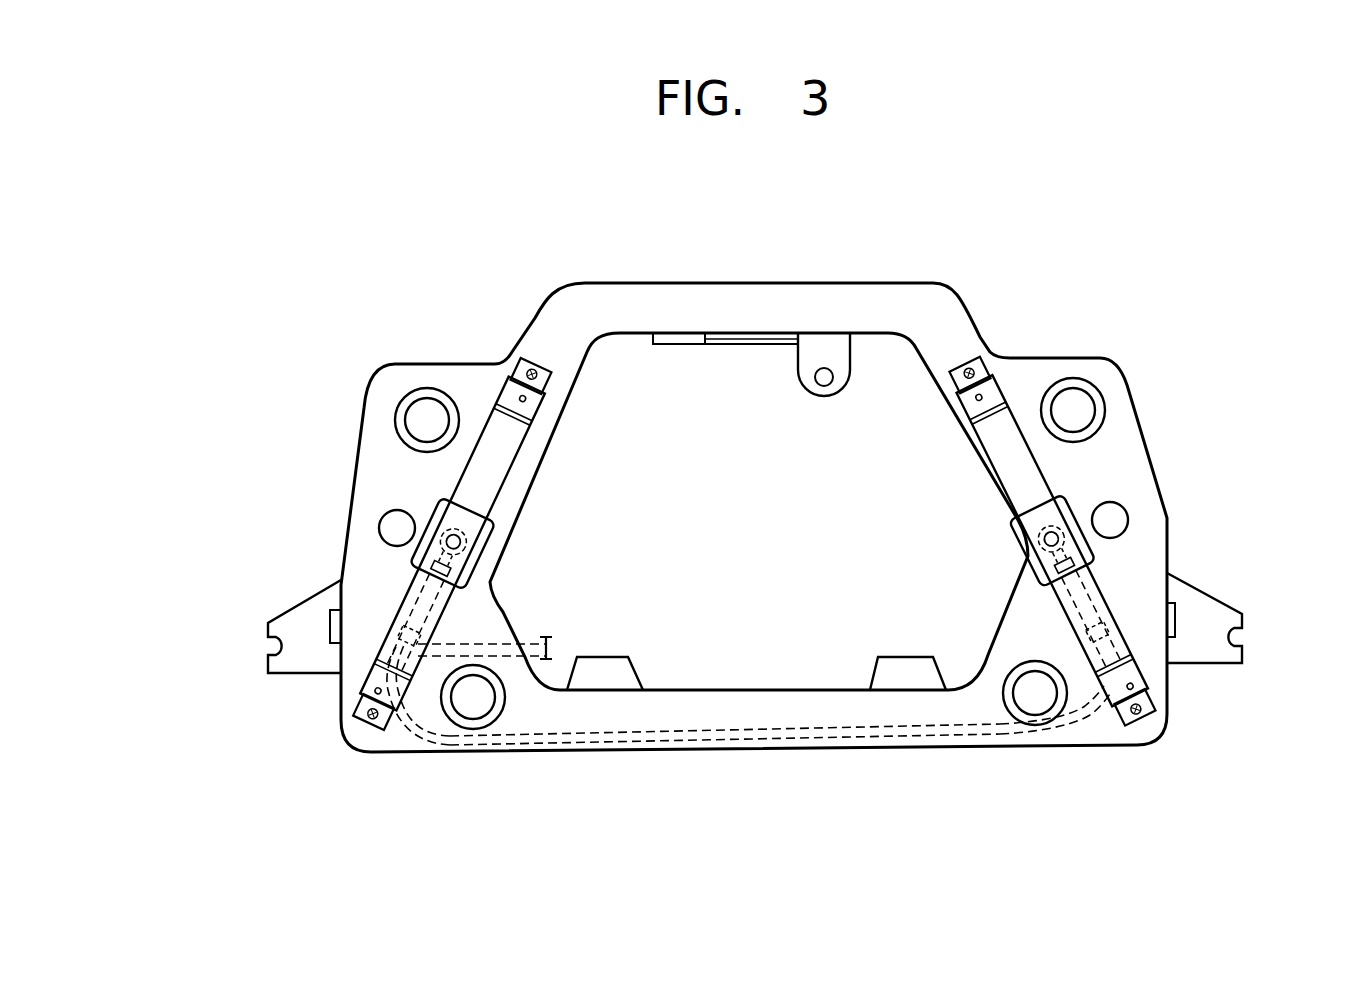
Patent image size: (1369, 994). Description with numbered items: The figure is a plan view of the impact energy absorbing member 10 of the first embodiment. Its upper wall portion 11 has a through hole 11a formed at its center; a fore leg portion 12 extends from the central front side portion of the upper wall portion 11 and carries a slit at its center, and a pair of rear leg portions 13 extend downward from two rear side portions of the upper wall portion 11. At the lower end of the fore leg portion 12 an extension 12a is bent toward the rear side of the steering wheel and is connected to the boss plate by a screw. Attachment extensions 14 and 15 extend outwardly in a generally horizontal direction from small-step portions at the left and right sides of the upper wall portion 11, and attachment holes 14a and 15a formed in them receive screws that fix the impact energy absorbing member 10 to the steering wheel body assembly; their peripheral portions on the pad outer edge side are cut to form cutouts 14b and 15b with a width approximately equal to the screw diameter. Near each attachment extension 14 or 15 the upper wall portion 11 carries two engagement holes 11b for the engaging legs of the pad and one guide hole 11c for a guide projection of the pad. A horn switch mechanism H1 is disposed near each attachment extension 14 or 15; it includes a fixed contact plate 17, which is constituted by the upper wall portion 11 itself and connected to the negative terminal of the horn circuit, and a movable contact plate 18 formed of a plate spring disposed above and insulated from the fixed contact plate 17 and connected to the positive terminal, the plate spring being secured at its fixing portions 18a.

The impact energy absorbing member 10 is at (1057, 232).
The upper wall portion 11 is at (740, 300).
The through hole 11a is at (590, 355).
The engagement holes 11b is at (427, 412).
The guide hole 11c is at (398, 522).
The fore leg portion 12 is at (823, 335).
The extension 12a is at (824, 364).
The rear leg portions 13 is at (604, 680).
The attachment extension 14 is at (1200, 610).
The attachment hole 14a is at (1236, 628).
The cutout 14b is at (1240, 650).
The attachment extension 15 is at (300, 665).
The attachment hole 15a is at (272, 645).
The cutout 15b is at (275, 662).
The fixed contact plate 17 is at (471, 383).
The movable contact plate 18 is at (985, 393).
The strap fixing tabs 18a is at (526, 401).
The horn switch mechanism H1 is at (499, 555).